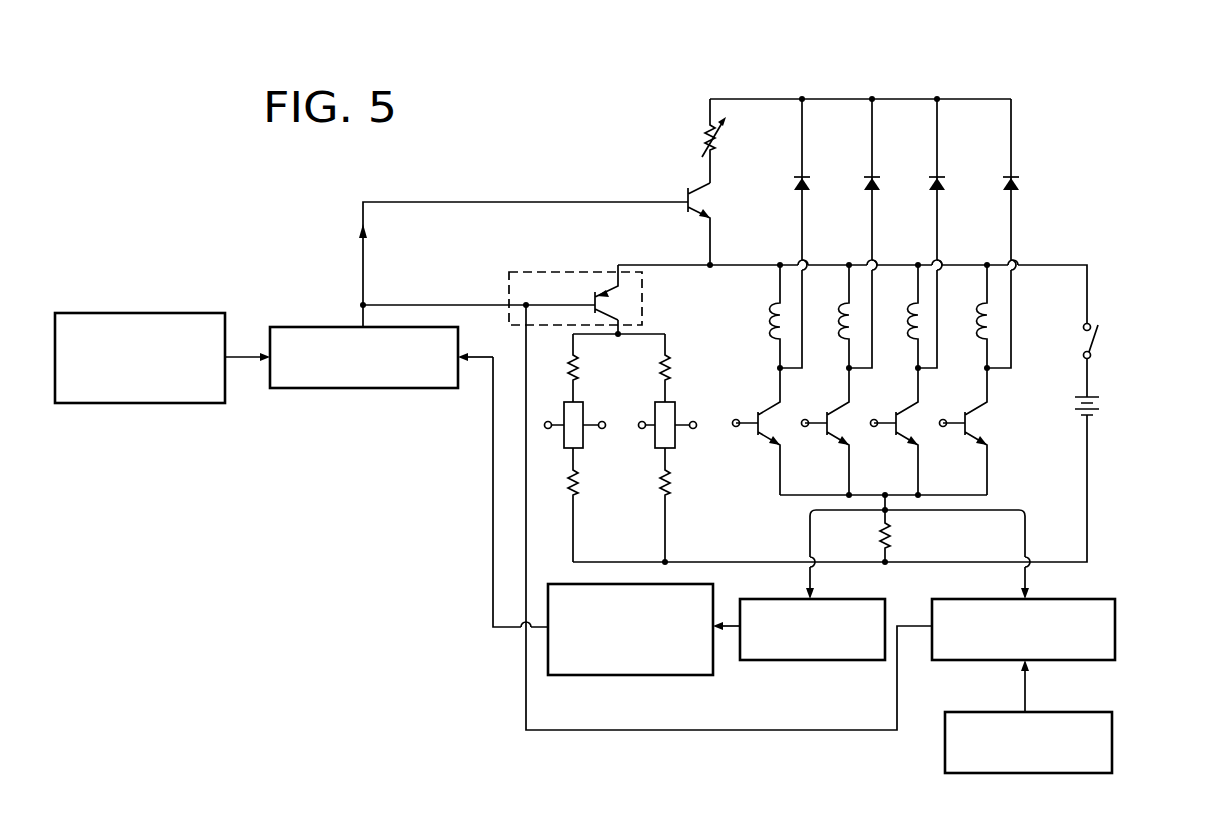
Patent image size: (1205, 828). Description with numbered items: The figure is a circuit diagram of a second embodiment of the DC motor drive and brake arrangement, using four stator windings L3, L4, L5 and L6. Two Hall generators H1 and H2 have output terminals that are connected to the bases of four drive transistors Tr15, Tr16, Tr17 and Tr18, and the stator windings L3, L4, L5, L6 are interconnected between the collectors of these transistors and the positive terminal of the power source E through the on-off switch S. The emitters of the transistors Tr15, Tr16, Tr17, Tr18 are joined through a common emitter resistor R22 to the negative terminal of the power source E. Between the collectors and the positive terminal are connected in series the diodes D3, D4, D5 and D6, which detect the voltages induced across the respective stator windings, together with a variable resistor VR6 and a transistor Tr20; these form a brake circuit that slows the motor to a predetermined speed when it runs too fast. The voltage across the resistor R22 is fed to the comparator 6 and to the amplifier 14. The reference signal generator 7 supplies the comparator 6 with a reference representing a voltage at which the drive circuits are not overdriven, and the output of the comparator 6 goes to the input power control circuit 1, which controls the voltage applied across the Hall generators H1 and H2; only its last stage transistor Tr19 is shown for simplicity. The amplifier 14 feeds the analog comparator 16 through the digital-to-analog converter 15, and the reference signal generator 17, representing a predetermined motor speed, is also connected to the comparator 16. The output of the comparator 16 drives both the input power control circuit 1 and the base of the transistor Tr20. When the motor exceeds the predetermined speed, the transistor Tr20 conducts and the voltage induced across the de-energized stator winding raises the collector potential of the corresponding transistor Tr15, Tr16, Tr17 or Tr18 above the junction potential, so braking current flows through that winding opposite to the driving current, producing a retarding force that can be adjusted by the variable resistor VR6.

The input power control circuit 1 is at (509, 285).
The comparator 6 is at (1115, 620).
The reference signal generator 7 is at (1112, 730).
The amplifier 14 is at (797, 662).
The digital-to-analog converter 15 is at (625, 677).
The analog comparator 16 is at (300, 327).
The reference signal generator 17 is at (143, 313).
The variable resistor VR6 is at (726, 137).
The transistor Tr20 is at (700, 204).
The transistor Tr19 is at (620, 299).
The transistor Tr15 is at (766, 426).
The transistor Tr16 is at (835, 426).
The transistor Tr17 is at (904, 426).
The transistor Tr18 is at (973, 426).
The diode D3 is at (804, 177).
The diode D4 is at (874, 177).
The diode D5 is at (939, 177).
The diode D6 is at (1013, 177).
The stator winding L3 is at (773, 318).
The stator winding L4 is at (847, 318).
The stator winding L5 is at (916, 318).
The stator winding L6 is at (985, 318).
The Hall generator H1 is at (578, 400).
The Hall generator H2 is at (672, 400).
The common emitter resistor R22 is at (914, 536).
The on-off switch S is at (1100, 339).
The power source E is at (1102, 406).